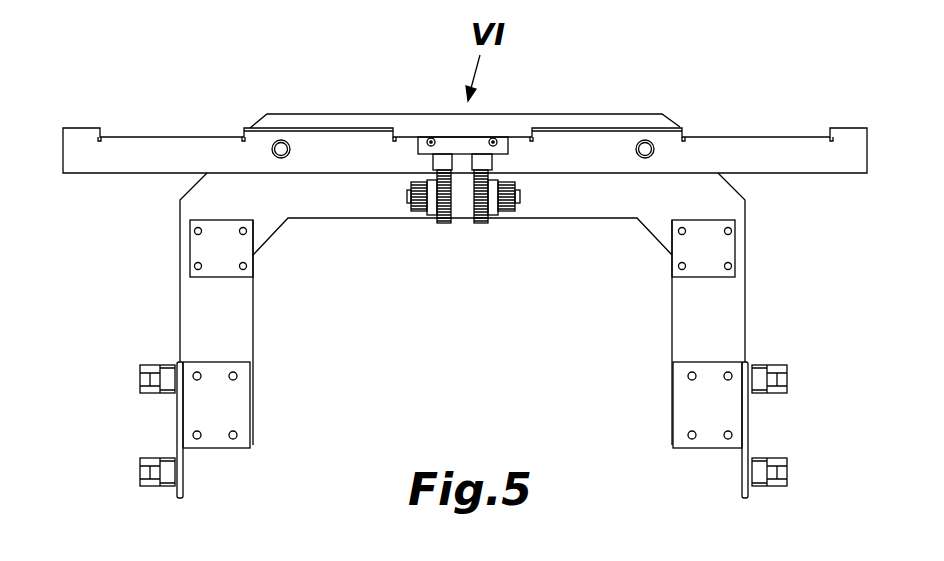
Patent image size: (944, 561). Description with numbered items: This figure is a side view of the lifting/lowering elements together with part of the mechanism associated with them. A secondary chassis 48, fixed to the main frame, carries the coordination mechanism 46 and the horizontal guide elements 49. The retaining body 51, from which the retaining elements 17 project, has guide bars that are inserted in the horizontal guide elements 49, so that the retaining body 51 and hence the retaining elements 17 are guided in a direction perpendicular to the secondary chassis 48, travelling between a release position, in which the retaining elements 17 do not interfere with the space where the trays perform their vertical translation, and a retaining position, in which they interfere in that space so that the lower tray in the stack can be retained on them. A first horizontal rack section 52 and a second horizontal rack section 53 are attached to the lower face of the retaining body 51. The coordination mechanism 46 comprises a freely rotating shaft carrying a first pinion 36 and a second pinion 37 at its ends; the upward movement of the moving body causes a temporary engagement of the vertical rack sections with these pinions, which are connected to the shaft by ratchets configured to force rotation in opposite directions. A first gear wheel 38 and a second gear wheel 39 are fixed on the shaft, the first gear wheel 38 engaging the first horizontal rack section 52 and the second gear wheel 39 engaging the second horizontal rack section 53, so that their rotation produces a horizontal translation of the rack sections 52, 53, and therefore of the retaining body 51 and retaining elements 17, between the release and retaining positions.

The retaining elements 17 is at (85, 132).
The retaining body 51 is at (189, 150).
The horizontal guide elements 49 is at (282, 146).
The second horizontal rack section 53 is at (443, 158).
The coordination mechanism 46 is at (462, 183).
The first horizontal rack section 52 is at (482, 158).
The second gear wheel 39 is at (445, 224).
The first gear wheel 38 is at (478, 224).
The second pinion 37 is at (413, 208).
The first pinion 36 is at (512, 211).
The secondary chassis 48 is at (265, 203).